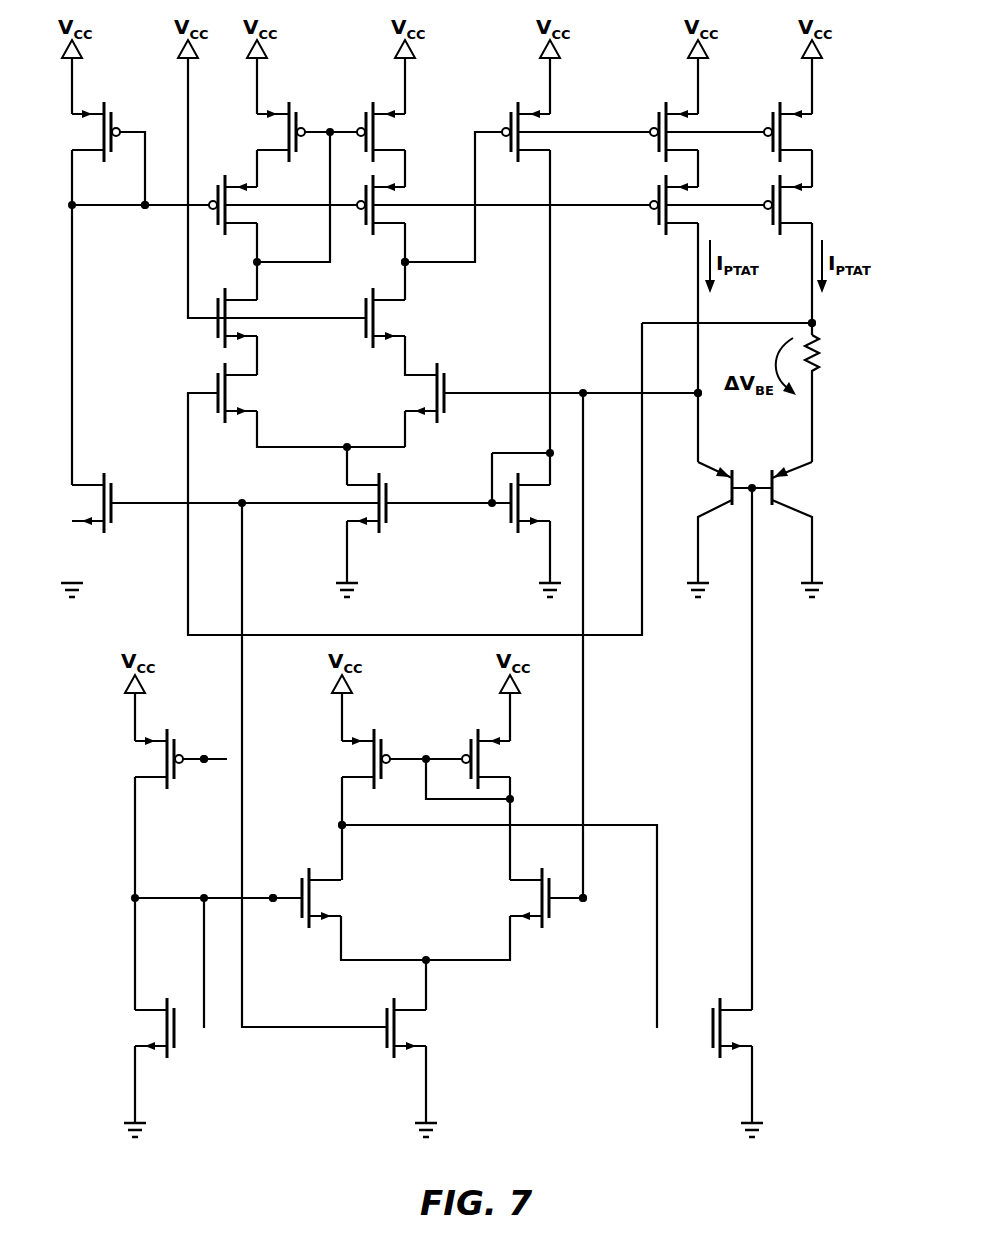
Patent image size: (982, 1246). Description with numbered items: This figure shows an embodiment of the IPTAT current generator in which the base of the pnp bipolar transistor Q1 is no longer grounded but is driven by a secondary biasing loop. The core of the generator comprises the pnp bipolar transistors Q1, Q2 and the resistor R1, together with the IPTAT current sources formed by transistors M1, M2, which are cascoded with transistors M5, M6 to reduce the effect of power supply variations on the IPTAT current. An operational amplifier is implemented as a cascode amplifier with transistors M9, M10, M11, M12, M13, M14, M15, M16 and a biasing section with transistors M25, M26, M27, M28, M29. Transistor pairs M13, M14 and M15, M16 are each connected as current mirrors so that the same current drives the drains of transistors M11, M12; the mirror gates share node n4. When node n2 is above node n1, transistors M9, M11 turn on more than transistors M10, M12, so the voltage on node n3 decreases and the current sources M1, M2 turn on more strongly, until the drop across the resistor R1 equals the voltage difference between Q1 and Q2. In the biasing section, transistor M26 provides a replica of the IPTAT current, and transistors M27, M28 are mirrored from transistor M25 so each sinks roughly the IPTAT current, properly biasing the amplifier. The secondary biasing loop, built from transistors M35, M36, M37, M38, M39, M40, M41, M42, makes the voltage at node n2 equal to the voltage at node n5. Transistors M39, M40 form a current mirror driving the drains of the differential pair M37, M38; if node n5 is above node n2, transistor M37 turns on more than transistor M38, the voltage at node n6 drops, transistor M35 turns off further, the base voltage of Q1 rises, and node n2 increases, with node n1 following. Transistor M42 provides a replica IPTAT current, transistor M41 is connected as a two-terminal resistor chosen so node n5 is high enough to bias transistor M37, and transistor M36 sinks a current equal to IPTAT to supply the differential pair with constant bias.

The transistor M1 is at (692, 132).
The transistor M2 is at (795, 132).
The transistor M5 is at (692, 205).
The transistor M6 is at (804, 205).
The transistor M9 is at (410, 393).
The transistor M10 is at (249, 393).
The transistor M11 is at (398, 318).
The transistor M12 is at (259, 318).
The transistor M13 is at (402, 205).
The transistor M14 is at (255, 205).
The transistor M15 is at (397, 132).
The transistor M16 is at (263, 132).
The transistor M25 is at (542, 503).
The transistor M26 is at (549, 132).
The transistor M27 is at (341, 503).
The transistor M28 is at (74, 503).
The transistor M29 is at (79, 132).
The transistor M35 is at (749, 1028).
The transistor M36 is at (420, 1028).
The transistor M37 is at (335, 898).
The transistor M38 is at (519, 898).
The transistor M39 is at (347, 759).
The transistor M40 is at (503, 759).
The transistor M41 is at (139, 1028).
The transistor M42 is at (143, 759).
The pnp bipolar transistor Q1 is at (702, 520).
The pnp bipolar transistor Q2 is at (811, 733).
The resistor R1 is at (825, 355).
The node n1 is at (827, 313).
The node n2 is at (639, 645).
The node n3 is at (315, 499).
The node n4 is at (147, 218).
The node n5 is at (276, 887).
The node n6 is at (327, 826).